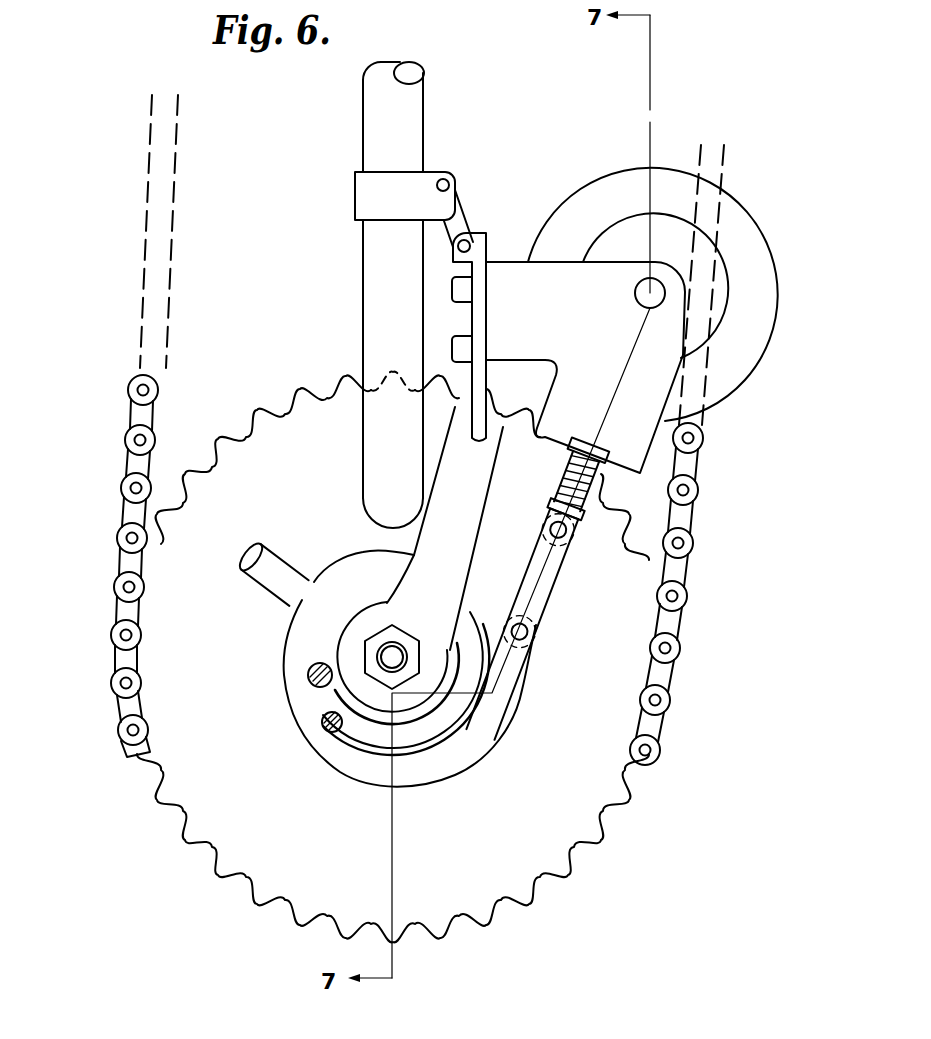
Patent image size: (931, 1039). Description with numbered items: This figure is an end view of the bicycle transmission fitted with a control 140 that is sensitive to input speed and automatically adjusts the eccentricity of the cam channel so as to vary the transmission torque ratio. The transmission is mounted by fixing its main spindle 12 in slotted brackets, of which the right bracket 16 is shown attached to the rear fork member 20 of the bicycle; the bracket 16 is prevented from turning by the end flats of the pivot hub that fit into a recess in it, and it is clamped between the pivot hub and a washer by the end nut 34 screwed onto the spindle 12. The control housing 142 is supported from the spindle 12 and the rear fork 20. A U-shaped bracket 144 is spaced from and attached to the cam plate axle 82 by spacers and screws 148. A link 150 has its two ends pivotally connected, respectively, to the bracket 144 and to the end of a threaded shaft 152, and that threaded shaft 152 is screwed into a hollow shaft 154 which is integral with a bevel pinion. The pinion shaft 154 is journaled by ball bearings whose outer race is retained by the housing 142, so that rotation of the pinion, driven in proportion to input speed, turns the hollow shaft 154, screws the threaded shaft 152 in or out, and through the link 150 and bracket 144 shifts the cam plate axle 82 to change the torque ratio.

The main spindle 12 is at (394, 650).
The right bracket 16 is at (372, 533).
The rear fork member 20 is at (372, 298).
The end nut 34 is at (418, 649).
The cam plate axle 82 is at (290, 637).
The control 140 is at (559, 180).
The housing 142 is at (560, 316).
The U-shaped bracket 144 is at (478, 745).
The screws 148 is at (318, 729).
The link 150 is at (547, 593).
The threaded shaft 152 is at (556, 505).
The hollow shaft 154 is at (568, 478).